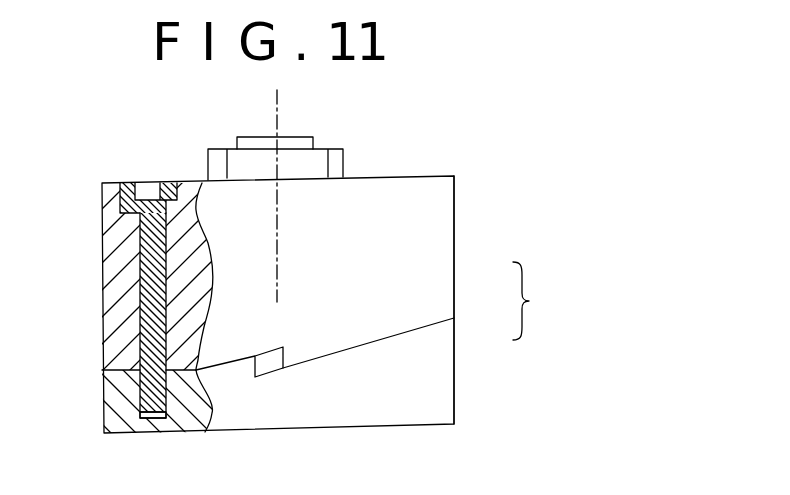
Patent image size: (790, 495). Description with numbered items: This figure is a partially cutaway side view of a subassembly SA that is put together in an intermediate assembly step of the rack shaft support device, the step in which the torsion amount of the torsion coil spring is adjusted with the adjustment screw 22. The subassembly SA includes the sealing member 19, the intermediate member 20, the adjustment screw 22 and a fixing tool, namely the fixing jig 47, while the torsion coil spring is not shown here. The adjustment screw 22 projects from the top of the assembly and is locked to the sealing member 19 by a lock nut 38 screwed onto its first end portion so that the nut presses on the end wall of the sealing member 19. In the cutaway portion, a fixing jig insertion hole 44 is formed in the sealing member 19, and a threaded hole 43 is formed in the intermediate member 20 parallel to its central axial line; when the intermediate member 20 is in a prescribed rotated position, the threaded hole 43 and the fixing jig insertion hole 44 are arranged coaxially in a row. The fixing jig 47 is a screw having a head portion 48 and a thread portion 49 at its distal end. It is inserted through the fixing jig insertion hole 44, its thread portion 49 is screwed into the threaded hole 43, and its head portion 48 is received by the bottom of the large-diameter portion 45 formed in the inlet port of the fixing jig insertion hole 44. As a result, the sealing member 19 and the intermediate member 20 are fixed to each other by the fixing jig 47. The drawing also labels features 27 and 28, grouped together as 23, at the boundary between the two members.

The sealing member 19 is at (456, 239).
The subassembly SA is at (466, 185).
The intermediate member 20 is at (456, 372).
The adjustment screw 22 is at (298, 137).
The lock nut 38 is at (208, 178).
The stepped portion 23 is at (537, 301).
The step 27 is at (420, 333).
The inclined surface 28 is at (390, 338).
The fixing jig insertion hole 44 is at (140, 327).
The large-diameter portion 45 is at (122, 190).
The fixing jig 47 is at (138, 255).
The head portion 48 is at (128, 206).
The threaded hole 43 is at (153, 402).
The thread portion 49 is at (170, 402).